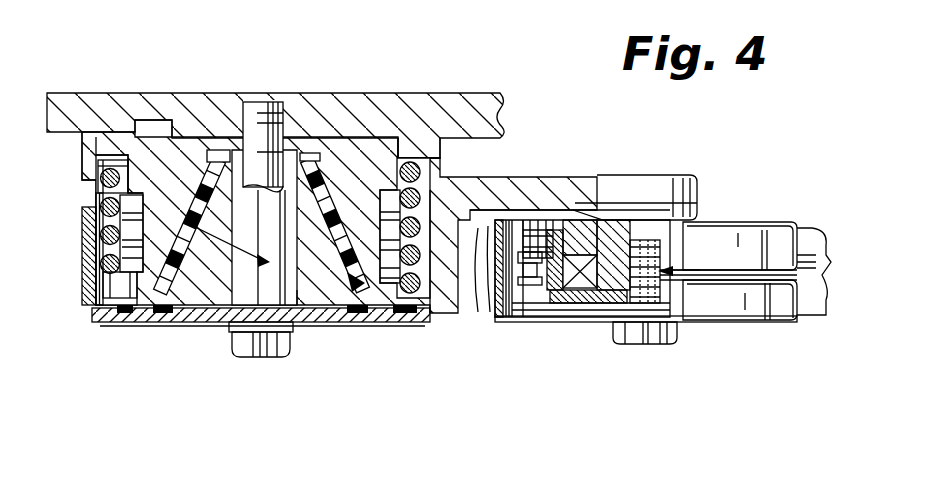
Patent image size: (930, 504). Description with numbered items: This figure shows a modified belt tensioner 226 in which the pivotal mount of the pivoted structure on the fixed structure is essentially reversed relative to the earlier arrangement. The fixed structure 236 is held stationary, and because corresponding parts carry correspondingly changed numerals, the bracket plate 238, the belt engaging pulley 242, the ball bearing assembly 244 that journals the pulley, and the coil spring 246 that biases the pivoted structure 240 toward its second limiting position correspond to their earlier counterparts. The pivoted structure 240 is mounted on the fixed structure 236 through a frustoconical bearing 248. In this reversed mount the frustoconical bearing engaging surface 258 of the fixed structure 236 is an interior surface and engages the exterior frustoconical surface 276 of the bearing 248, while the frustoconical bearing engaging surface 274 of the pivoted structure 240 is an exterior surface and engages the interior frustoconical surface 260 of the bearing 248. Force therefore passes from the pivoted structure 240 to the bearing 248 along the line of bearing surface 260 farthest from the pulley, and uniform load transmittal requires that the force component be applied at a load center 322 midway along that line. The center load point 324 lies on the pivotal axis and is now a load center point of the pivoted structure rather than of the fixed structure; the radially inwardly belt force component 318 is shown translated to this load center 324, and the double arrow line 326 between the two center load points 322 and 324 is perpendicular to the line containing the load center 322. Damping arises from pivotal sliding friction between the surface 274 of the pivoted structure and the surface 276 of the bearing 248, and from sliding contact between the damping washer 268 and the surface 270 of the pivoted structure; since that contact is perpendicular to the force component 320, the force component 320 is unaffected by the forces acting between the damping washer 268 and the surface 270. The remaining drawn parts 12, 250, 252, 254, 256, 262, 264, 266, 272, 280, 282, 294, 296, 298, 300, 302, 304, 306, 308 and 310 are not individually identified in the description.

The shaft 12 is at (808, 313).
The modified belt tensioner 226 is at (556, 124).
The fixed structure 236 is at (379, 128).
The mounting plate 238 is at (465, 103).
The pivoted structure 240 is at (454, 330).
The end plate 242 is at (727, 330).
The bearing 244 is at (584, 308).
The ball 246 is at (434, 166).
The frustoconical bearing 248 is at (199, 183).
The recess 250 is at (420, 147).
The bore 252 is at (160, 130).
The nut 254 is at (262, 357).
The housing wall 256 is at (163, 182).
The frustoconical bearing engaging surface 258 is at (352, 322).
The interior frustoconical surface 260 is at (165, 313).
The washer 262 is at (269, 355).
The screw shank 264 is at (214, 253).
The seal 266 is at (107, 313).
The damping washer 268 is at (92, 309).
The surface of the pivoted structure 270 is at (372, 325).
The direction arrow 272 is at (185, 222).
The frustoconical bearing engaging surface 274 is at (113, 252).
The exterior frustoconical surface 276 is at (284, 262).
The bearing retainer ring 280 is at (86, 220).
The side wall 282 is at (87, 157).
The support arm 294 is at (572, 178).
The hub 296 is at (672, 266).
The bracket 298 is at (480, 305).
The support plate 300 is at (536, 225).
The drum 302 is at (830, 262).
The spacer 304 is at (566, 222).
The fastener 306 is at (578, 310).
The spacer 308 is at (537, 312).
The nut 310 is at (635, 333).
The radially inwardly belt force component 318 is at (676, 270).
The force component 320 is at (291, 322).
The load center 322 is at (186, 178).
The center load point 324 is at (222, 186).
The double arrow line 326 is at (218, 310).